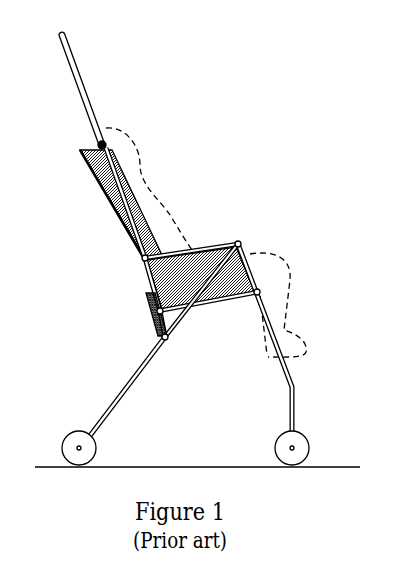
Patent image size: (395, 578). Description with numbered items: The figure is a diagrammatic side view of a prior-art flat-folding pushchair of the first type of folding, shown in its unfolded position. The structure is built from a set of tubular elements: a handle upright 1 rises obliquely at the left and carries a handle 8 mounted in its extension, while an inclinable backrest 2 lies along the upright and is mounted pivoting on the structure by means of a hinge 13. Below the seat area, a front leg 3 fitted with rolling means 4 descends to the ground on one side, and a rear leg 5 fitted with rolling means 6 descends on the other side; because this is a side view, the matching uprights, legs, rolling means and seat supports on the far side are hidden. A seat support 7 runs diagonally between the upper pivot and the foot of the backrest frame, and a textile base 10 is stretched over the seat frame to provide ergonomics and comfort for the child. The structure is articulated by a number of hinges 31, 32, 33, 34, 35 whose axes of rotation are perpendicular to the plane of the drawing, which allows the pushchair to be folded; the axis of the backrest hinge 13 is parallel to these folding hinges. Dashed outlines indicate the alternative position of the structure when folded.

The handle upright 1 is at (135, 205).
The inclinable backrest 2 is at (104, 190).
The front leg 3 is at (281, 370).
The rolling means 4 is at (305, 436).
The rear leg 5 is at (124, 386).
The rolling means 6 is at (68, 434).
The seat support 7 is at (200, 296).
The handle 8 is at (83, 78).
The textile base 10 is at (197, 251).
The hinge 13 is at (147, 300).
The hinge 31 is at (243, 242).
The hinge 32 is at (260, 292).
The hinge 33 is at (152, 256).
The hinge 34 is at (150, 316).
The hinge 35 is at (160, 339).